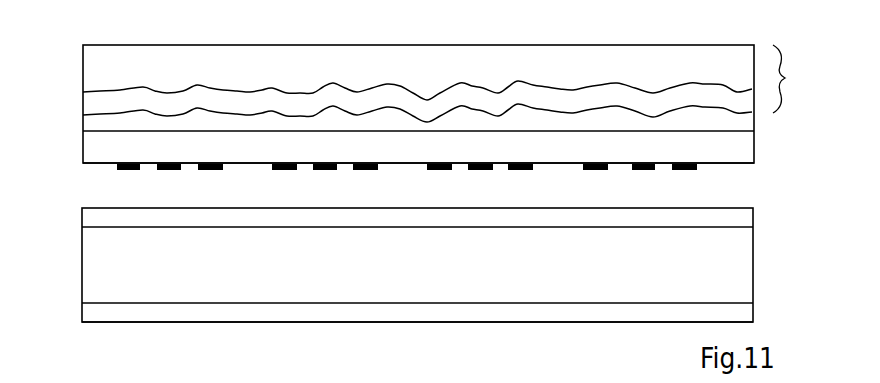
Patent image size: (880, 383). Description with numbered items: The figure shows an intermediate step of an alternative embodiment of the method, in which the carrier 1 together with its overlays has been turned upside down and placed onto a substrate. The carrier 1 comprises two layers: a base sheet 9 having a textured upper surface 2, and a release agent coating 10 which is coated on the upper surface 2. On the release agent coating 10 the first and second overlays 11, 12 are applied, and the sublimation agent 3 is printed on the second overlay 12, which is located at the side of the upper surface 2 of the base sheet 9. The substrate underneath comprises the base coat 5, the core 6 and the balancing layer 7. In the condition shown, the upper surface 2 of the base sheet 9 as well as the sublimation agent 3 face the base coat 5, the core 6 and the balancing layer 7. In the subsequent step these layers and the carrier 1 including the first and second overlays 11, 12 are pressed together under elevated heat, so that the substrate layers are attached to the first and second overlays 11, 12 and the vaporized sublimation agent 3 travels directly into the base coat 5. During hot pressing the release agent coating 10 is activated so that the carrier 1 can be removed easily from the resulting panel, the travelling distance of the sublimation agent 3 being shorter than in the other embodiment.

The carrier 1 is at (787, 79).
The upper surface 2 is at (713, 88).
The sublimation agent 3 is at (128, 170).
The base coat 5 is at (95, 222).
The core 6 is at (95, 276).
The balancing layer 7 is at (95, 313).
The base sheet 9 is at (95, 73).
The release agent coating 10 is at (98, 103).
The first overlay 11 is at (95, 125).
The second overlay 12 is at (97, 154).